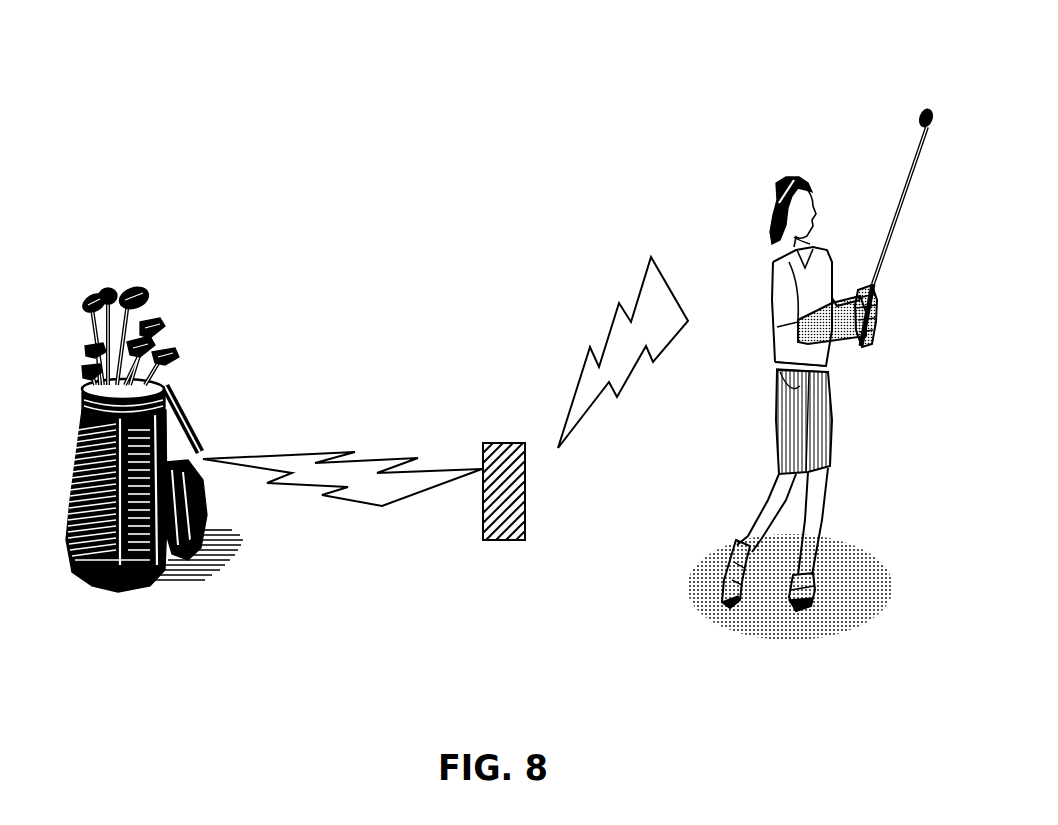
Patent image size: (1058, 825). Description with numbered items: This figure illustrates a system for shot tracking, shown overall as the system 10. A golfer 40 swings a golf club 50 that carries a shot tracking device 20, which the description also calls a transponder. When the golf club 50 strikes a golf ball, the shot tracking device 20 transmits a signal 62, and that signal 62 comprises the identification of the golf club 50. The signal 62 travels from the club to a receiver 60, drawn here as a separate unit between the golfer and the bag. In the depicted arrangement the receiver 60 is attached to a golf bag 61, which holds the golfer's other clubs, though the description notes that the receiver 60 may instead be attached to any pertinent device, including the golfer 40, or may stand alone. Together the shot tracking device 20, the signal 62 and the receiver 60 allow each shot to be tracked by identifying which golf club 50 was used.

The golf swing monitoring system 10 is at (366, 116).
The shot tracking device 20 is at (858, 348).
The golfer 40 is at (842, 457).
The golf club 50 is at (890, 208).
The receiver 60 is at (511, 513).
The golf bag 61 is at (128, 273).
The signal 62 is at (600, 352).